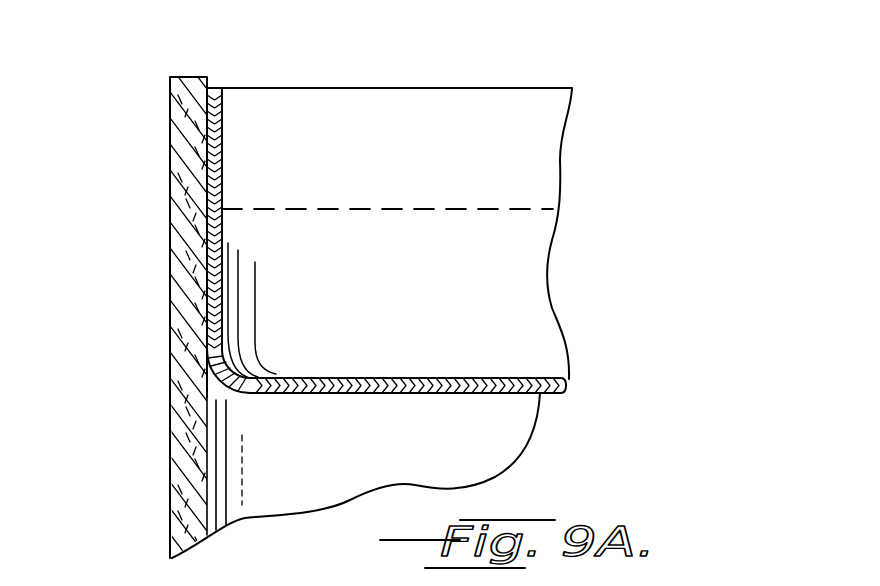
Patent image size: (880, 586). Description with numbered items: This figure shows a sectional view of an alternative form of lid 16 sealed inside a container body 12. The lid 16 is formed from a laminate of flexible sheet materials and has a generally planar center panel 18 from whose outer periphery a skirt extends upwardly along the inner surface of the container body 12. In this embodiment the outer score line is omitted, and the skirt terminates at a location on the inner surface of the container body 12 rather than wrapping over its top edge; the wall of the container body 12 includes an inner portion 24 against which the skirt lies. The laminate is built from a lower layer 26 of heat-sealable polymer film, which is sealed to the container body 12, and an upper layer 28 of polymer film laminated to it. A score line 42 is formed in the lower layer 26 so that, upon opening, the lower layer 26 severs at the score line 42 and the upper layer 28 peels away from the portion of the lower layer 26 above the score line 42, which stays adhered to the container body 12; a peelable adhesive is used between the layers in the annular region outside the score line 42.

The container body 12 is at (147, 395).
The lid 16 is at (625, 0).
The center panel 18 is at (412, 377).
The wall board 24 is at (172, 178).
The lower layer 26 is at (207, 270).
The upper layer 28 is at (222, 147).
The score line 42 is at (292, 210).